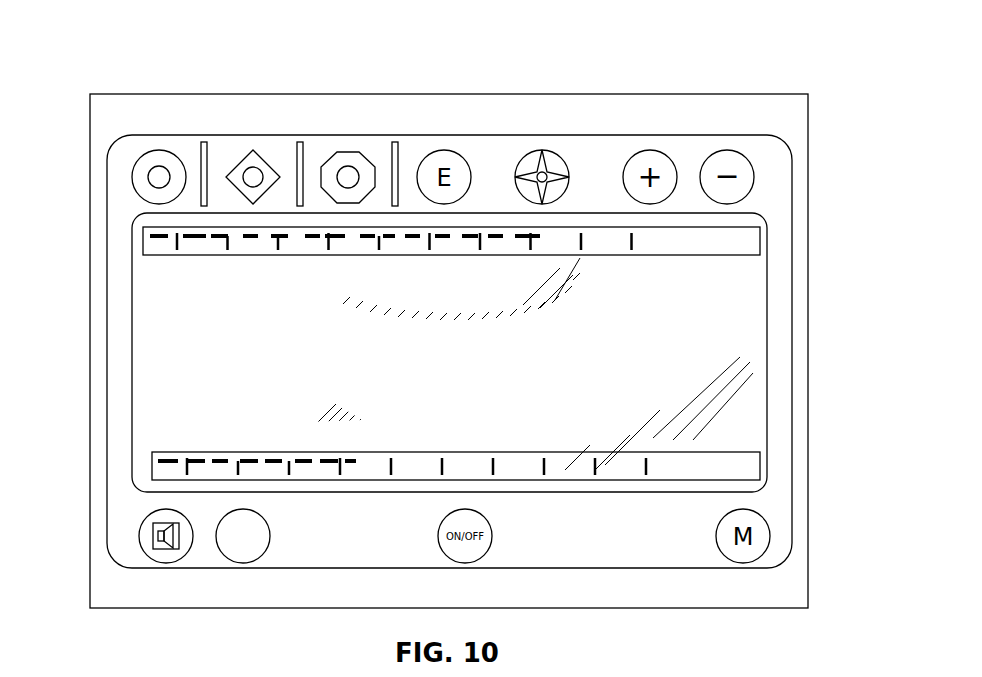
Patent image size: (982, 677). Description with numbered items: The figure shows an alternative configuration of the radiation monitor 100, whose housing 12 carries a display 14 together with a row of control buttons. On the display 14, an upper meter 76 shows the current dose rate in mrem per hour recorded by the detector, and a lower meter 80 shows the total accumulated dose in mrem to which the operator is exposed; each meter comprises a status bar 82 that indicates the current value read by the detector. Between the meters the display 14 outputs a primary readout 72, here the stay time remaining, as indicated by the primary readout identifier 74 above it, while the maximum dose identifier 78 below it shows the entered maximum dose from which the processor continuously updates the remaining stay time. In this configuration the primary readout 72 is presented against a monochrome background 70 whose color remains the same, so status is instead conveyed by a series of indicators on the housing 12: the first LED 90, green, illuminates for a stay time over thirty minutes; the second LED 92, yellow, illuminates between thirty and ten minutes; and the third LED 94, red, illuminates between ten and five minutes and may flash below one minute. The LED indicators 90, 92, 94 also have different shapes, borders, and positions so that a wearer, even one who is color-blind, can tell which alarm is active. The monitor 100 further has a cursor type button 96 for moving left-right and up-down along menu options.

The radiation monitor 100 is at (128, 55).
The housing 12 is at (775, 503).
The display 14 is at (768, 298).
The background 70 is at (745, 347).
The primary readout 72 is at (668, 382).
The primary readout identifier 74 is at (580, 294).
The upper meter 76 is at (631, 257).
The maximum dose identifier 78 is at (570, 418).
The lower meter 80 is at (612, 478).
The status bar 82 is at (247, 240).
The first LED 90 is at (161, 151).
The second LED 92 is at (258, 151).
The third LED 94 is at (354, 151).
The cursor type button 96 is at (542, 156).